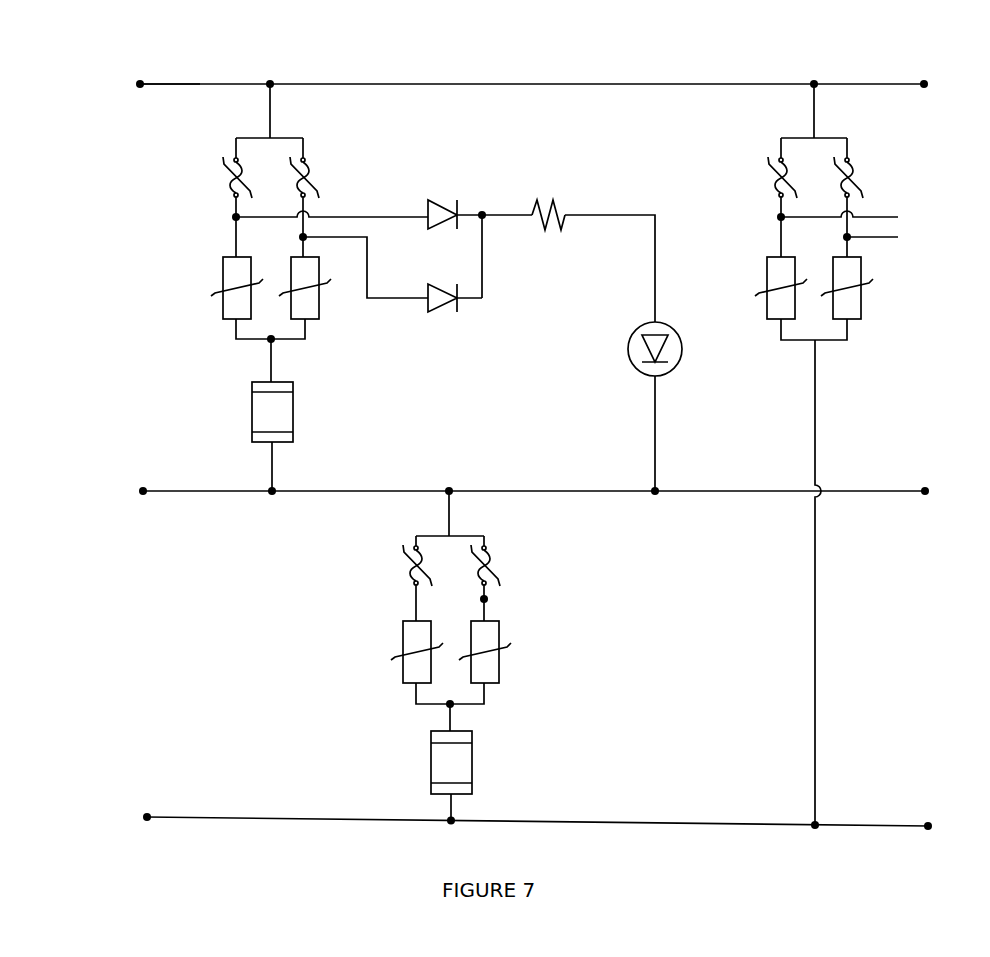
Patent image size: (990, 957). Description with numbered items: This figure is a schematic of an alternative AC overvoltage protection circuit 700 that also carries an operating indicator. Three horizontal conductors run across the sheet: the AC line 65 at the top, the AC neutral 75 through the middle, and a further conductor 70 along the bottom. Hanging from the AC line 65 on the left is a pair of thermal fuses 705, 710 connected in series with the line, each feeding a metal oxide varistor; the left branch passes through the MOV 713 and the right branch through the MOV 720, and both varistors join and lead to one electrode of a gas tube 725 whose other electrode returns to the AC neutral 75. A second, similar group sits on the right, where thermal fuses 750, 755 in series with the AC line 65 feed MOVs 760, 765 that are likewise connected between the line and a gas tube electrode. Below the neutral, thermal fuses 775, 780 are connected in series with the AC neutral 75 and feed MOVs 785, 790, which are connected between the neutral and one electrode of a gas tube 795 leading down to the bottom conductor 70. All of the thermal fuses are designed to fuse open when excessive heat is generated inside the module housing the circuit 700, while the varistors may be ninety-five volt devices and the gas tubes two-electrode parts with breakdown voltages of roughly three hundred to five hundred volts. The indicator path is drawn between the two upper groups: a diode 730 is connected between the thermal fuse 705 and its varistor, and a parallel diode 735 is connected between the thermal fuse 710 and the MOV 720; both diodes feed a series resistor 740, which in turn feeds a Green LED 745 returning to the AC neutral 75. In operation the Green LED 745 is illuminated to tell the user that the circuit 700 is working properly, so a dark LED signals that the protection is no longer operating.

The AC line 65 is at (143, 82).
The second line conductor 70 is at (149, 814).
The AC neutral 75 is at (145, 488).
The AC overvoltage protection circuit 700 is at (525, 82).
The thermal fuse 705 is at (229, 152).
The thermal fuse 710 is at (311, 152).
The metal oxide varistor 713 is at (236, 255).
The MOV 720 is at (303, 255).
The gas tube 725 is at (272, 436).
The diode 730 is at (455, 214).
The diode 735 is at (455, 298).
The resistor 740 is at (532, 211).
The Green LED 745 is at (668, 323).
The thermal fuse 750 is at (773, 152).
The thermal fuse 755 is at (853, 152).
The MOV 760 is at (765, 278).
The MOV 765 is at (863, 278).
The thermal fuse 775 is at (410, 546).
The thermal fuse 780 is at (490, 546).
The MOV 785 is at (416, 620).
The MOV 790 is at (490, 620).
The gas tube 795 is at (451, 776).